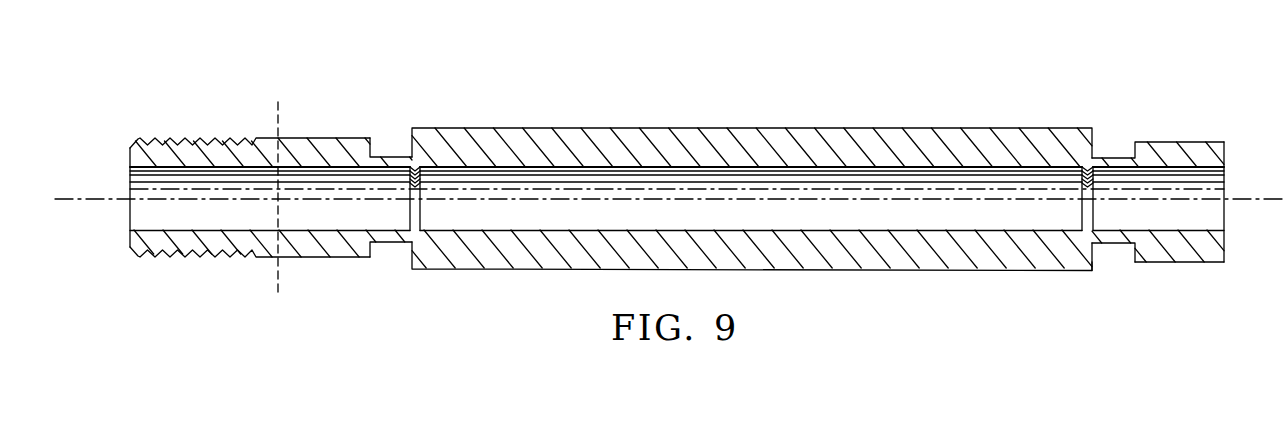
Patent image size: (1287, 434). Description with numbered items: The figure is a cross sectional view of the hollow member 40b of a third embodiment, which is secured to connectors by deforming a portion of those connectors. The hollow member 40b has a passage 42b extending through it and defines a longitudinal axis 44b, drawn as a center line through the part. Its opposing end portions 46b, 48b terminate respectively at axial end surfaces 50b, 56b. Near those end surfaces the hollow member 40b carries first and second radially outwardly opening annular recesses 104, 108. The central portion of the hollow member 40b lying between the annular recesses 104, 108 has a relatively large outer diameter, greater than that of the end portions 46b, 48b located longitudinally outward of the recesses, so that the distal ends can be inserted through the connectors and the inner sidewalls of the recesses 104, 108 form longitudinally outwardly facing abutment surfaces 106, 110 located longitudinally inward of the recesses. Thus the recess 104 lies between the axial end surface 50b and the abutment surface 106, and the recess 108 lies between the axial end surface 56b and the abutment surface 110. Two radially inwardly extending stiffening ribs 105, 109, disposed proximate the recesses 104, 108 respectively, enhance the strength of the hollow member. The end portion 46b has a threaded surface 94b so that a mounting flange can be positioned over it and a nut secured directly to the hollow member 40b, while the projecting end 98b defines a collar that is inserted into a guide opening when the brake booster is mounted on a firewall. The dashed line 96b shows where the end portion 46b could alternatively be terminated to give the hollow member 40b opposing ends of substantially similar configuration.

The hollow member 40b is at (807, 145).
The passage 42b is at (600, 175).
The longitudinal axis 44b is at (82, 200).
The end portion 46b is at (290, 125).
The end portion 48b is at (1174, 130).
The axial end surface 50b is at (130, 150).
The axial end surface 56b is at (1225, 160).
The threaded surface 94b is at (177, 255).
The dashed line 96b is at (274, 272).
The projecting end 98b is at (1213, 257).
The first annular recess 104 is at (385, 243).
The stiffening rib 105 is at (417, 222).
The abutment surface 106 is at (413, 141).
The second annular recess 108 is at (1120, 244).
The stiffening rib 109 is at (1088, 172).
The abutment surface 110 is at (1097, 261).